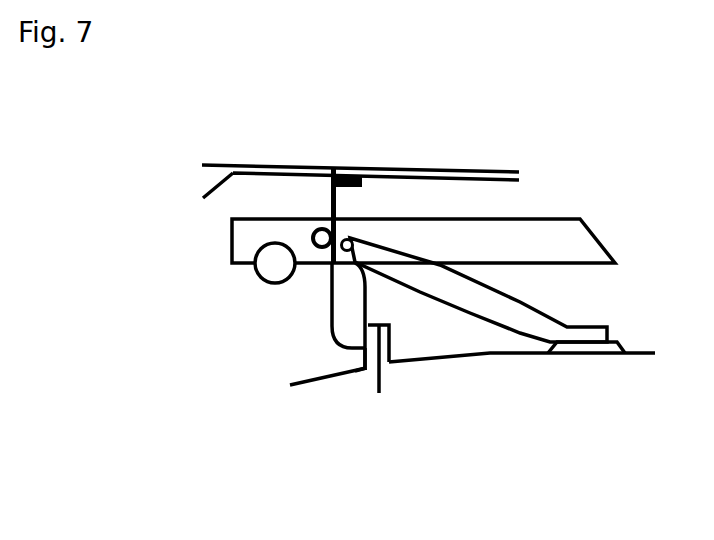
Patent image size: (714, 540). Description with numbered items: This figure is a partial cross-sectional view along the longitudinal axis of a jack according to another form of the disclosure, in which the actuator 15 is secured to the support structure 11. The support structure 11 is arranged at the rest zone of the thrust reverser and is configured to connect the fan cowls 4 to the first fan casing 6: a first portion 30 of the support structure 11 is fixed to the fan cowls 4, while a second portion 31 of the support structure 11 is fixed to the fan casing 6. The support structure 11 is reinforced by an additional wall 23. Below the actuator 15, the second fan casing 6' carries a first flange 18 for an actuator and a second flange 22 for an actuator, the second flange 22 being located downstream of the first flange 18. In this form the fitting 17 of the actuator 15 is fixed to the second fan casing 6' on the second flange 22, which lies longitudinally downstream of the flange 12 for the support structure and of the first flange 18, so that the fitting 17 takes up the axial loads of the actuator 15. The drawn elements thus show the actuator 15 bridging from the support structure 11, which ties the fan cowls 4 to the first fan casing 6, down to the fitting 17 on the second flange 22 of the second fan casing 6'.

The fan cowls 4 is at (263, 163).
The first portion of the support structure 30 is at (340, 165).
The support structure 11 is at (358, 163).
The actuator 15 is at (226, 247).
The fitting 17 is at (440, 312).
The second flange for an actuator 22 is at (615, 357).
The first fan casing 6 is at (320, 442).
The second fan casing 6' is at (522, 411).
The additional wall 23 is at (332, 303).
The first flange for an actuator 18 is at (396, 352).
The flange for the support structure 12 is at (369, 350).
The second portion of the support structure 31 is at (360, 372).